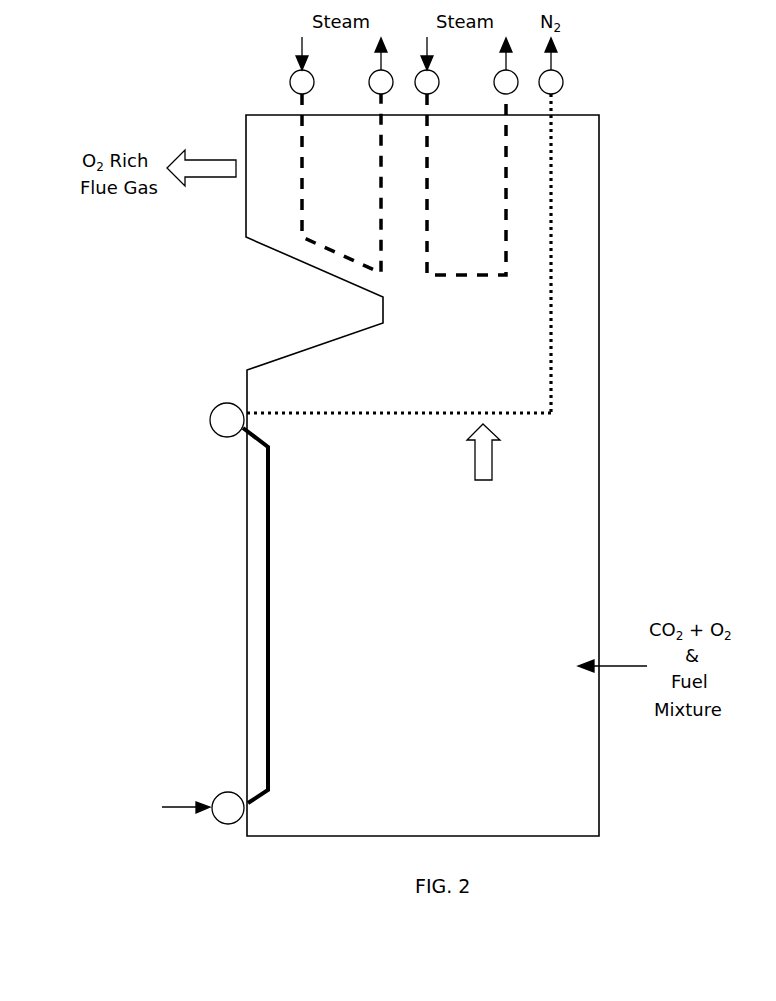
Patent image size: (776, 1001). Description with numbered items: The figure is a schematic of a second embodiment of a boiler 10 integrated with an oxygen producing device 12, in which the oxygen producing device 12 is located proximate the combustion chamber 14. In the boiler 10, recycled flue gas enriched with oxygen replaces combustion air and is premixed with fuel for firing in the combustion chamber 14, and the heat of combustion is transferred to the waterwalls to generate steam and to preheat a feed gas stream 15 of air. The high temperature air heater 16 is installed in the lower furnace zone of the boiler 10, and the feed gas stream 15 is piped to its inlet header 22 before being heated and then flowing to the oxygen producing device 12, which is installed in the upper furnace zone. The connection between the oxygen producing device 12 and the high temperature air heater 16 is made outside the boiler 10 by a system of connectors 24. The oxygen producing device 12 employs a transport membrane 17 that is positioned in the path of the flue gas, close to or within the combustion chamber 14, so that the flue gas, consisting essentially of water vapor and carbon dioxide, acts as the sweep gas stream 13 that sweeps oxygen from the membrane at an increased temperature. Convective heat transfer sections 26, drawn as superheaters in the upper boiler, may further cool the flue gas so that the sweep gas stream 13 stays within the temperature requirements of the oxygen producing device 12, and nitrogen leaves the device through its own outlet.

The boiler 10 is at (601, 461).
The oxygen producing device 12 is at (549, 352).
The sweep gas stream 13 is at (493, 446).
The combustion chamber 14 is at (464, 682).
The feed gas stream 15 is at (200, 802).
The high temperature air heater 16 is at (272, 760).
The transport membrane 17 is at (486, 410).
The inlet header 22 is at (215, 797).
The connectors 24 is at (210, 420).
The convective heat transfer sections 26 is at (385, 190).